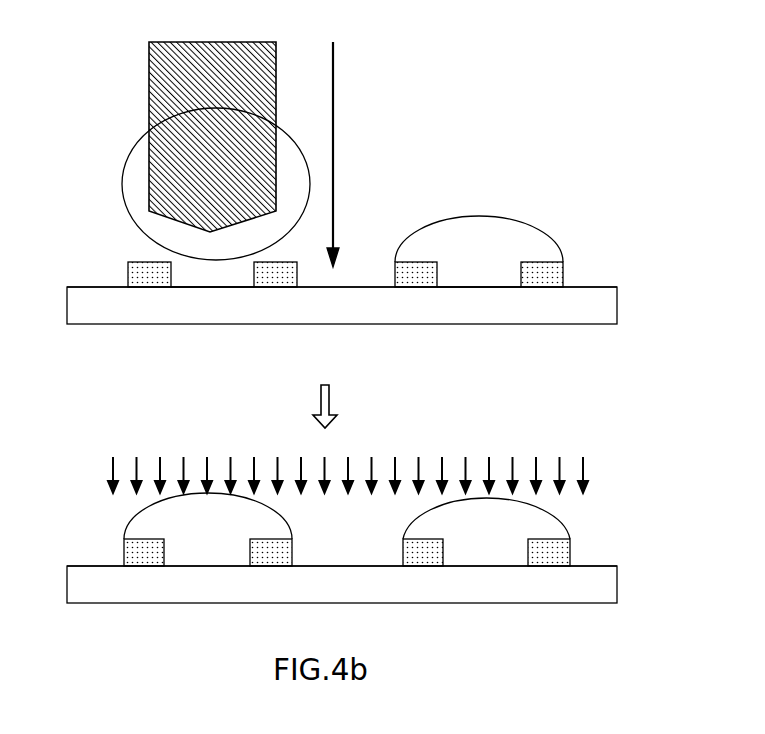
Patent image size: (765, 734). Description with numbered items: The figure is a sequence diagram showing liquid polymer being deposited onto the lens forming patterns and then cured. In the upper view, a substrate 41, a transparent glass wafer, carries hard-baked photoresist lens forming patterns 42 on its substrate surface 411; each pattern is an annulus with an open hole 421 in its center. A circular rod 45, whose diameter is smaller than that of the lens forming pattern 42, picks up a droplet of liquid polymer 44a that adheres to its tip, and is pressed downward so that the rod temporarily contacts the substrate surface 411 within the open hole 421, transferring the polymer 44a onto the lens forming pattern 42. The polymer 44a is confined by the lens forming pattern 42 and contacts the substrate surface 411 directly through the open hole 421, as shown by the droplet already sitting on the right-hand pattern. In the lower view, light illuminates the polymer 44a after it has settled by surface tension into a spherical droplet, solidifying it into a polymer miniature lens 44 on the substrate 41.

The substrate 41 is at (598, 310).
The substrate surface 411 is at (577, 287).
The open hole 421 is at (212, 282).
The lens forming pattern 42 is at (148, 270).
The polymer 44a is at (140, 172).
The circular rod 45 is at (173, 95).
The polymer miniature lens 44 is at (143, 522).